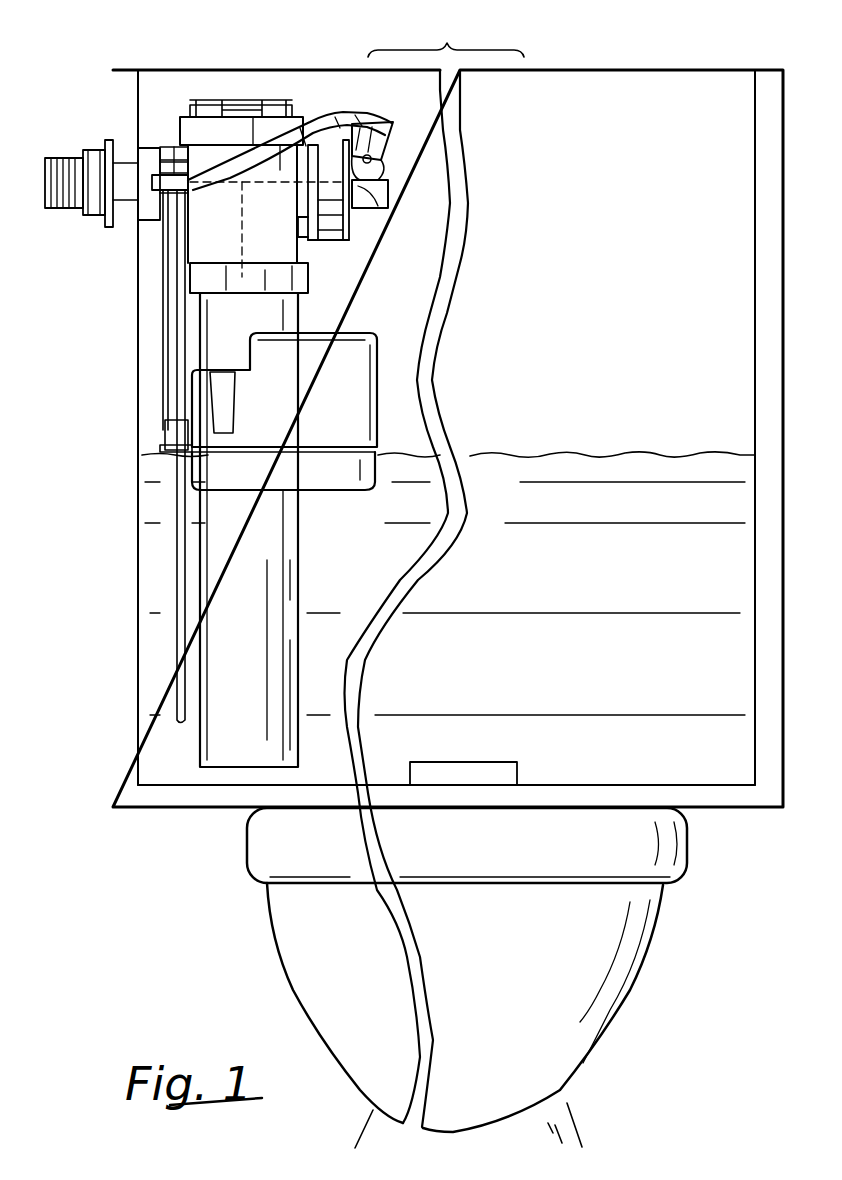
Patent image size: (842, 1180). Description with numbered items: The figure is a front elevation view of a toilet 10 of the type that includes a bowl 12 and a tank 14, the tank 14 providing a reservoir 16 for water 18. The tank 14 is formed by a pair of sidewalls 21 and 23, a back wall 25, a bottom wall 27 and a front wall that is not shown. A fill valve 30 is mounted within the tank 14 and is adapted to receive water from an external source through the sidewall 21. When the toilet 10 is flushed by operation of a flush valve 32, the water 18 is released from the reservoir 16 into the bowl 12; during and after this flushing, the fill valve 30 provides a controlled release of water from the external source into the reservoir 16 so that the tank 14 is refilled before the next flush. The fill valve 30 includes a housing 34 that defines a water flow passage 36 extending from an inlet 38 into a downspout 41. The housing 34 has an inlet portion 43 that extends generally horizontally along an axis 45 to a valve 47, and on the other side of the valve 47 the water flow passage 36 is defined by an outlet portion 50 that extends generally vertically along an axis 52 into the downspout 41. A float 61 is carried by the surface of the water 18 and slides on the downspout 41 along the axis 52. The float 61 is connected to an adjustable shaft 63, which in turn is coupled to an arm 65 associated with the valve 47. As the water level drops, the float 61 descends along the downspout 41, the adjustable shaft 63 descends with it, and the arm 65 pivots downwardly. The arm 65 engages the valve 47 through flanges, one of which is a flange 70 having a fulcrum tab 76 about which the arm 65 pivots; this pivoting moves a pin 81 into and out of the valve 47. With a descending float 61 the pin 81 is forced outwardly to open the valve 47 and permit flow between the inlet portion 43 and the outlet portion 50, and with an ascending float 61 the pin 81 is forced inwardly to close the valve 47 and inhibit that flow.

The toilet 10 is at (183, 872).
The bowl 12 is at (683, 952).
The tank 14 is at (108, 655).
The reservoir 16 is at (710, 377).
The water 18 is at (720, 625).
The sidewall 21 is at (125, 588).
The sidewall 23 is at (773, 532).
The back wall 25 is at (727, 270).
The bottom wall 27 is at (730, 797).
The fill valve 30 is at (450, 294).
The flush valve 32 is at (508, 768).
The housing 34 is at (320, 258).
The water flow passage 36 is at (37, 168).
The inlet 38 is at (105, 118).
The downspout 41 is at (300, 573).
The inlet portion 43 is at (152, 150).
The axis 45 is at (290, 180).
The valve 47 is at (337, 222).
The outlet portion 50 is at (200, 242).
The axis 52 is at (267, 230).
The float 61 is at (350, 398).
The adjustable shaft 63 is at (163, 348).
The arm 65 is at (345, 120).
The flange 70 is at (380, 143).
The fulcrum tab 76 is at (372, 159).
The pin 81 is at (388, 205).